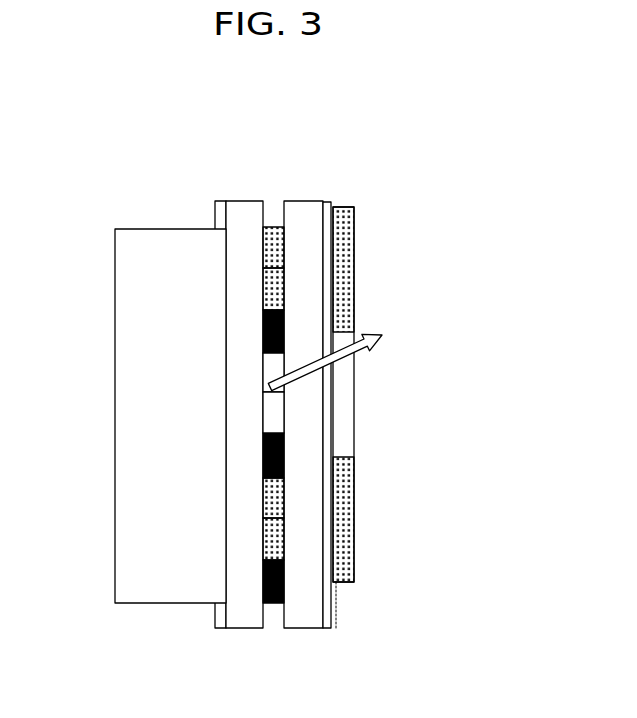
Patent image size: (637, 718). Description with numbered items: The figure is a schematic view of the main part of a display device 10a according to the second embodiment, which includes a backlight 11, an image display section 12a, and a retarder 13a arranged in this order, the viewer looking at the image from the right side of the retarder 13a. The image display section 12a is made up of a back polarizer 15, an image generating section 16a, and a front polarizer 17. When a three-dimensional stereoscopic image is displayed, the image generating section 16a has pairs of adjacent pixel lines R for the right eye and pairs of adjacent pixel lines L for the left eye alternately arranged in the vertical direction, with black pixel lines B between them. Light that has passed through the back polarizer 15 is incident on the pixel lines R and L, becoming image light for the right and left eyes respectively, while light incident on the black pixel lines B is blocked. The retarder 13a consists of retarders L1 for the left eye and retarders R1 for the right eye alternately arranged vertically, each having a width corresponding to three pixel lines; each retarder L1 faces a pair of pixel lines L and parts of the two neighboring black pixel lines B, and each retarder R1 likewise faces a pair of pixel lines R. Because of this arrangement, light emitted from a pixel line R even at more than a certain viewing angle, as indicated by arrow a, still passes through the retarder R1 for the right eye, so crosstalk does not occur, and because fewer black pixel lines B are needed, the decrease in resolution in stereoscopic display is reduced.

The display device 10a is at (445, 118).
The backlight 11 is at (135, 238).
The image display section 12a is at (308, 142).
The retarder 13a is at (350, 205).
The back polarizer 15 is at (218, 207).
The image generating section 16a is at (325, 193).
The front polarizer 17 is at (328, 205).
The pixel lines for the left eye L is at (262, 252).
The black pixel lines B is at (268, 334).
The pixel lines for the right eye R is at (272, 375).
The retarders for the left eye L1 is at (351, 263).
The retarders for the right eye R1 is at (352, 400).
The arrow a is at (383, 339).